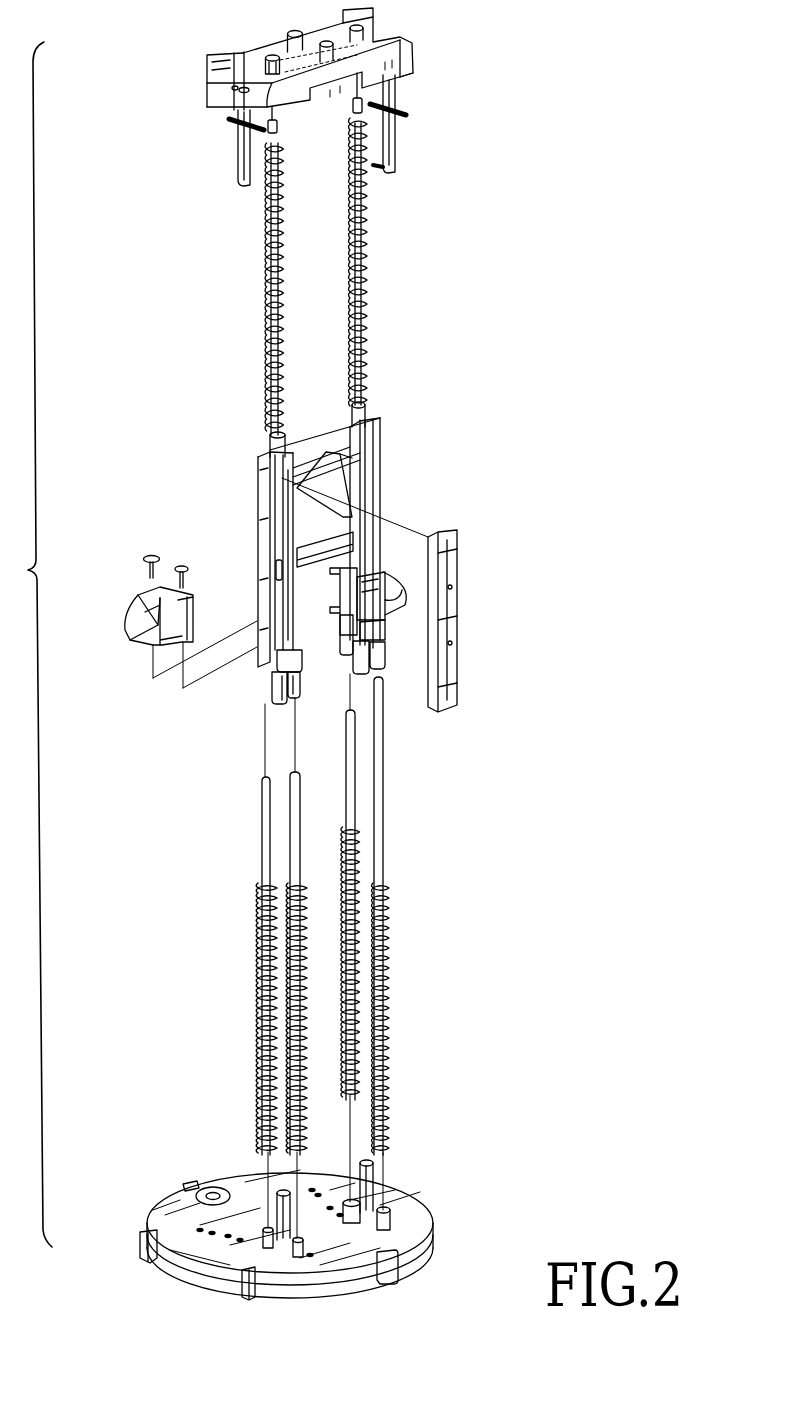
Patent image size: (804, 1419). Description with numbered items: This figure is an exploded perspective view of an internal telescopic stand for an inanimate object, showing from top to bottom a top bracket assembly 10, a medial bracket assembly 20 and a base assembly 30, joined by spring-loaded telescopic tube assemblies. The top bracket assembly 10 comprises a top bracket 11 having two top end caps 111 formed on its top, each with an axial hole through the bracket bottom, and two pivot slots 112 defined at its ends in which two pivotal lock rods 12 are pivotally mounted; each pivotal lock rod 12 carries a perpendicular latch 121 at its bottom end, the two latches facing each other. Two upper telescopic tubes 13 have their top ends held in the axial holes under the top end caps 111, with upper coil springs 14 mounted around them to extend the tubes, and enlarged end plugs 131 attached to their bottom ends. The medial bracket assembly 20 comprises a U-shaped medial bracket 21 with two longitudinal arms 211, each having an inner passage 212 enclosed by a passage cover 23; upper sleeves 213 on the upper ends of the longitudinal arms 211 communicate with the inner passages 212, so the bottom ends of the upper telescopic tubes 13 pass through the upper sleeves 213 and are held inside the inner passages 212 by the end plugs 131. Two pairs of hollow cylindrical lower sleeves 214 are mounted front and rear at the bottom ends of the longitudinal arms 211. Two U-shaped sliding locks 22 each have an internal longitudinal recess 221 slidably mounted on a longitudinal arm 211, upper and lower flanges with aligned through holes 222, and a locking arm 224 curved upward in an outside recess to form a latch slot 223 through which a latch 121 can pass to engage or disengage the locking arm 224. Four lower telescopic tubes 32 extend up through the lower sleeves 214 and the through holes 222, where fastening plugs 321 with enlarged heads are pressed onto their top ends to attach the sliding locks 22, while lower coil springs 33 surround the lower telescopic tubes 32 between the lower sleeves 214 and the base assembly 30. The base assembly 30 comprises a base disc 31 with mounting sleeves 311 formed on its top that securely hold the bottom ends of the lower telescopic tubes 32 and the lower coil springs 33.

The top bracket assembly 10 is at (194, 76).
The top bracket 11 is at (320, 40).
The top end caps 111 is at (268, 62).
The pivot slots 112 is at (243, 93).
The pivotal lock rods 12 is at (387, 133).
The latch 121 is at (380, 168).
The upper telescopic tubes 13 is at (358, 255).
The upper coil springs 14 is at (365, 317).
The medial bracket assembly 20 is at (436, 474).
The U-shaped medial bracket 21 is at (377, 433).
The longitudinal arms 211 is at (267, 495).
The inner passage 212 is at (280, 600).
The upper sleeves 213 is at (270, 440).
The lower sleeves 214 is at (295, 687).
The end plugs 131 is at (273, 570).
The sliding locks 22 is at (130, 654).
The internal longitudinal recess 221 is at (163, 590).
The through holes 222 is at (152, 590).
The latch slots 223 is at (128, 636).
The locking arm 224 is at (137, 608).
The fastening plugs 321 is at (146, 559).
The passage cover 23 is at (460, 630).
The base assembly 30 is at (412, 1148).
The base disc 31 is at (400, 1203).
The mounting sleeves 311 is at (393, 1218).
The lower telescopic tubes 32 is at (265, 827).
The lower coil springs 33 is at (268, 920).